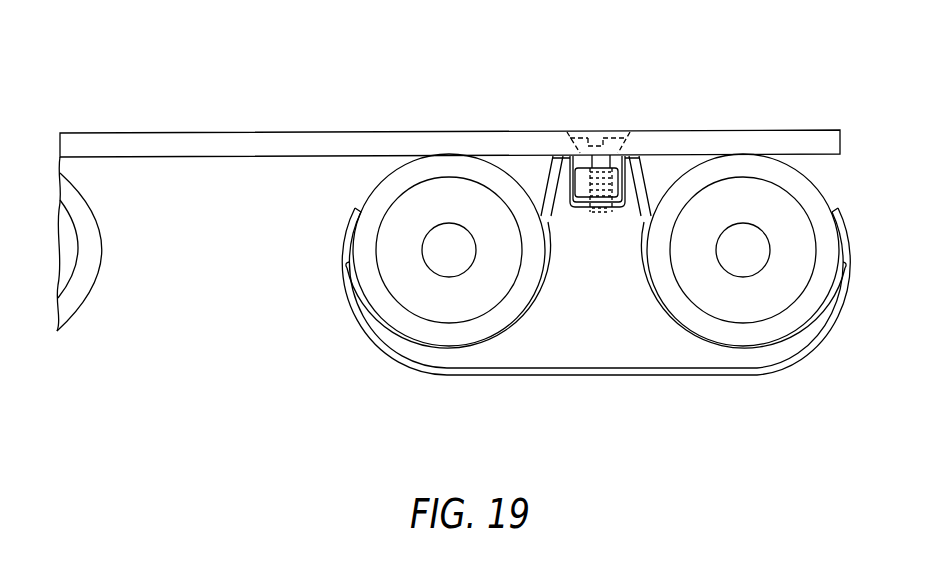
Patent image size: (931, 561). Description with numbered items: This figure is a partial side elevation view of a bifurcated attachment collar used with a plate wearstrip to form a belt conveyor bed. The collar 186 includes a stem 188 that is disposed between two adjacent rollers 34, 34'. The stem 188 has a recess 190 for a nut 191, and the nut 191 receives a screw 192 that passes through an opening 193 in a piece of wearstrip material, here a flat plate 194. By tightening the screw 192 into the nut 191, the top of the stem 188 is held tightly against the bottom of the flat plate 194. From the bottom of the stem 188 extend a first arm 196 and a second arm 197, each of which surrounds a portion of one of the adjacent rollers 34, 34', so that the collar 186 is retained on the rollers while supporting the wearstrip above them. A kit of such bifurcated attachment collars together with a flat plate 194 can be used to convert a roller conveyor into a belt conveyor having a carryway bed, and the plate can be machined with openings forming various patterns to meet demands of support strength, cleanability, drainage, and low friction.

The flat plate 194 is at (321, 132).
The roller 34 is at (429, 250).
The roller 34' is at (762, 250).
The second arm 197 is at (368, 320).
The first arm 196 is at (800, 342).
The collar 186 is at (641, 357).
The nut 191 is at (542, 160).
The stem 188 is at (633, 182).
The recess 190 is at (620, 160).
The screw 192 is at (598, 160).
The opening 193 is at (625, 135).